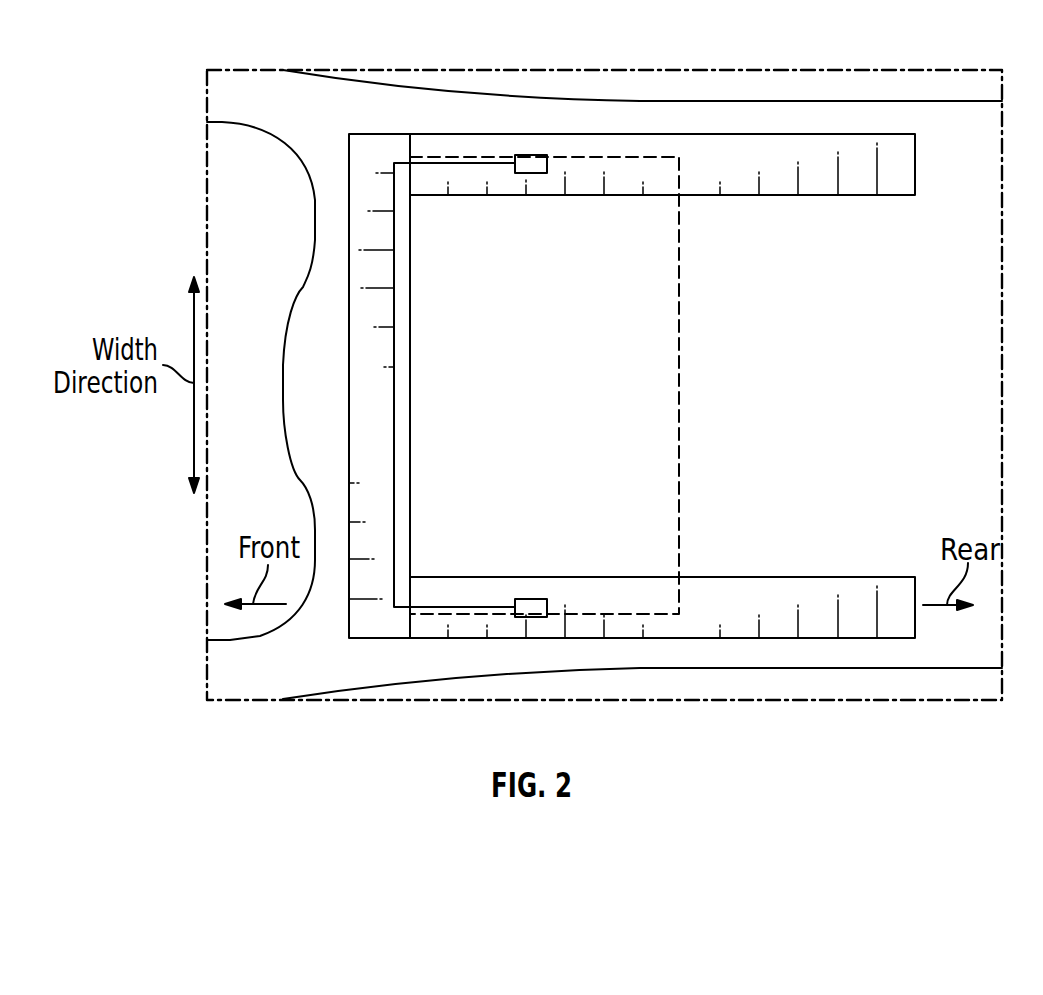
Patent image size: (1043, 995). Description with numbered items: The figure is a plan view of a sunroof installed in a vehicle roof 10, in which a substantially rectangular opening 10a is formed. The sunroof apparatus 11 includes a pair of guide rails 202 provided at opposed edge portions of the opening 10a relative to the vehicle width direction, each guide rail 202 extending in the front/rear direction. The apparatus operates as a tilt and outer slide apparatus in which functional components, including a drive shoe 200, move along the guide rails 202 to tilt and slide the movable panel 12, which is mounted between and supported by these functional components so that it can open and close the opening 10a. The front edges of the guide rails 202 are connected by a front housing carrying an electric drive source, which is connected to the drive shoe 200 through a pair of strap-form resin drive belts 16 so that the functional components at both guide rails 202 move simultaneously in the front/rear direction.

The vehicle roof 10 is at (805, 655).
The opening 10a is at (568, 415).
The sunroof apparatus 11 is at (818, 92).
The movable panel 12 is at (692, 311).
The drive belts 16 is at (395, 407).
The drive shoe 200 is at (547, 165).
The guide rails 202 is at (697, 134).